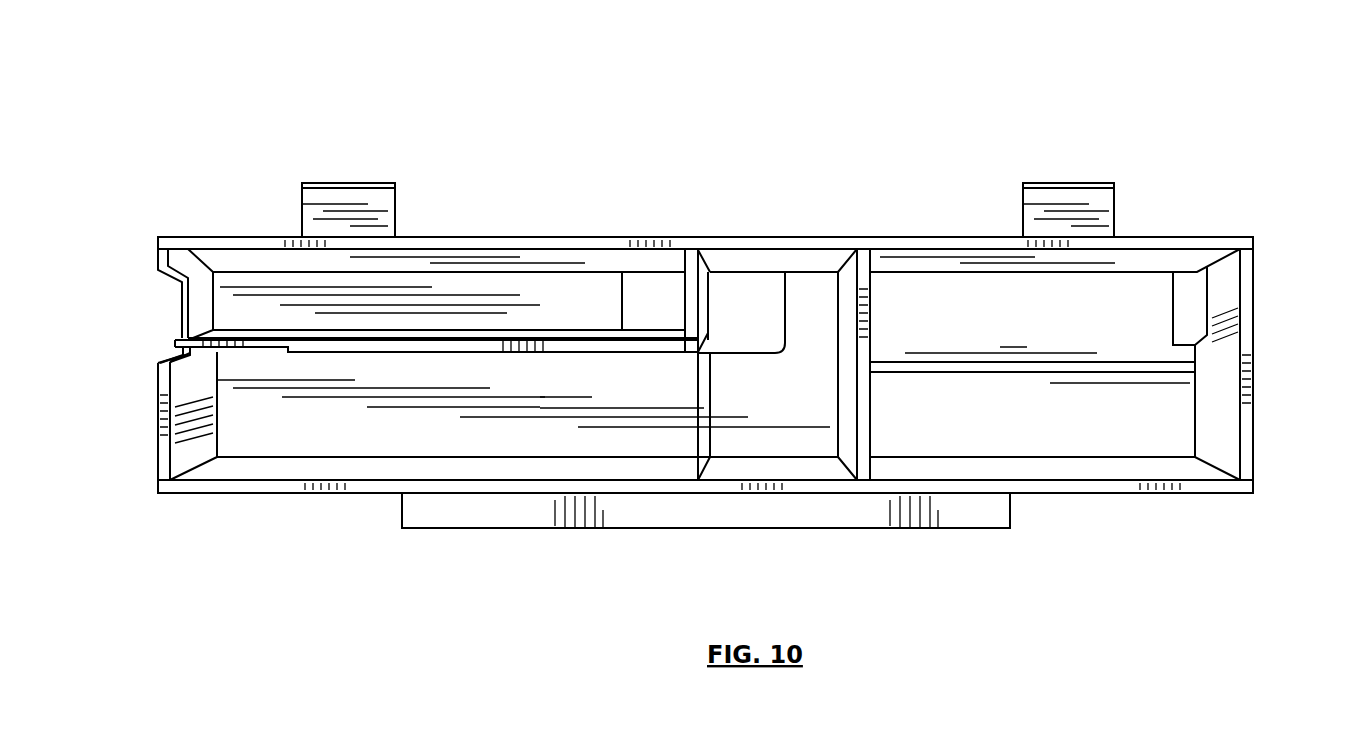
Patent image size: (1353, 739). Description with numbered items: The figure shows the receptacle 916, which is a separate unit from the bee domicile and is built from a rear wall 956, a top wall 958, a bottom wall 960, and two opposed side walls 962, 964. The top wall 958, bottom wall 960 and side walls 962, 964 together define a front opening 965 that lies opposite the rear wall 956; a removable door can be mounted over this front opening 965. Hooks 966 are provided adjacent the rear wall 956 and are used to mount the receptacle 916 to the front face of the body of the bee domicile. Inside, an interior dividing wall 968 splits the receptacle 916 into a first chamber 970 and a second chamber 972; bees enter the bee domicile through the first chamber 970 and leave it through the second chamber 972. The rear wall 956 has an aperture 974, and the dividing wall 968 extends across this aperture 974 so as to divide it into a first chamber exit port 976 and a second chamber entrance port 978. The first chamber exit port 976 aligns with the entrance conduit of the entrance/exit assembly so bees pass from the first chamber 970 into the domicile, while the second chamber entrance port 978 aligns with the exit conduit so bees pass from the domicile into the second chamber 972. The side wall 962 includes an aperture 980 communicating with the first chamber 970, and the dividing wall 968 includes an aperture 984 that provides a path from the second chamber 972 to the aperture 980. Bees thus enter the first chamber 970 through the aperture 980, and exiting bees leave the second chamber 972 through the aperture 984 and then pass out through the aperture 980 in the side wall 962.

The receptacle 916 is at (1223, 126).
The rear wall 956 is at (1157, 418).
The top wall 958 is at (777, 243).
The bottom wall 960 is at (1083, 485).
The side wall 962 is at (160, 466).
The side wall 964 is at (1247, 280).
The front opening 965 is at (268, 426).
The hooks 966 is at (1103, 202).
The interior dividing wall 968 is at (595, 345).
The first chamber 970 is at (443, 300).
The second chamber 972 is at (698, 364).
The aperture 974 is at (738, 300).
The first chamber exit port 976 is at (643, 287).
The second chamber entrance port 978 is at (768, 323).
The aperture 980 is at (166, 295).
The aperture 984 is at (238, 350).